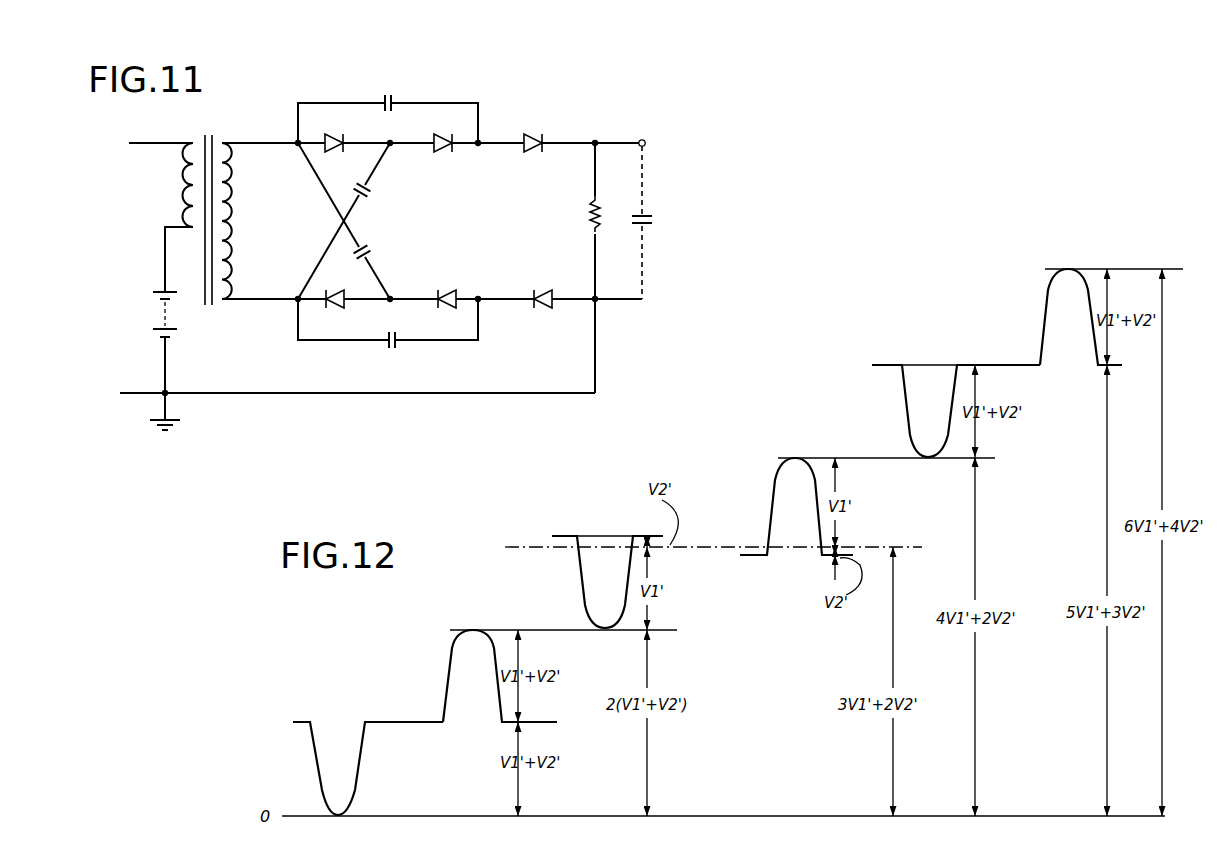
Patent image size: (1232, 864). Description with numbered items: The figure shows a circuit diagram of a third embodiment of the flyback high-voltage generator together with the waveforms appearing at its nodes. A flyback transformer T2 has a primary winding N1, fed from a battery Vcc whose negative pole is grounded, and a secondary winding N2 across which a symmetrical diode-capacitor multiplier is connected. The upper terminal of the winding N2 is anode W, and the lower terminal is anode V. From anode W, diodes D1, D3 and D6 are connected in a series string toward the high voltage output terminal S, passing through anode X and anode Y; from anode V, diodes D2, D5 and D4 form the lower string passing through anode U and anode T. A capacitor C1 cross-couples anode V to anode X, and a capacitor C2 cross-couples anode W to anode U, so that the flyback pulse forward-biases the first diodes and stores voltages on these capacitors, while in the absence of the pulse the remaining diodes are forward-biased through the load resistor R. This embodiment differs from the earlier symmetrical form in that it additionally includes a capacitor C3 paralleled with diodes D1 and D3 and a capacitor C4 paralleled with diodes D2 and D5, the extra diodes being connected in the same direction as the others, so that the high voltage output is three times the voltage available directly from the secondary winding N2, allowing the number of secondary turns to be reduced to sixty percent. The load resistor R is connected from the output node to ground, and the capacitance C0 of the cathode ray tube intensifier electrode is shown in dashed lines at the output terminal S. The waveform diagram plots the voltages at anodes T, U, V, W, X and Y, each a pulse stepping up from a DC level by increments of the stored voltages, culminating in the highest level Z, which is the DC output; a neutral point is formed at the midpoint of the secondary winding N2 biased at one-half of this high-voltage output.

In FIG. 11, the primary winding N1 is at (188, 188).
In FIG. 11, the secondary winding N2 is at (232, 205).
In FIG. 11, the flyback transformer T2 is at (212, 128).
In FIG. 11, the battery Vcc is at (158, 312).
In FIG. 11, the anode W is at (292, 139).
In FIG. 12, the anode W is at (770, 497).
In FIG. 11, the anode V is at (294, 306).
In FIG. 12, the anode V is at (561, 530).
In FIG. 11, the anode X is at (394, 150).
In FIG. 12, the anode X is at (898, 392).
In FIG. 11, the anode U is at (394, 294).
In FIG. 12, the anode U is at (444, 660).
In FIG. 11, the anode Y is at (483, 137).
In FIG. 12, the anode Y is at (1042, 297).
In FIG. 11, the anode T is at (483, 294).
In FIG. 12, the anode T is at (306, 746).
In FIG. 12, the anode Z is at (1156, 267).
In FIG. 11, the output terminal S is at (645, 140).
In FIG. 11, the diode D1' D1 is at (338, 128).
In FIG. 11, the diode D2' D2 is at (336, 309).
In FIG. 11, the diode D3' D3 is at (447, 128).
In FIG. 11, the diode D4' D4 is at (544, 289).
In FIG. 11, the diode D5' D5 is at (448, 290).
In FIG. 11, the diode D6' D6 is at (545, 138).
In FIG. 11, the capacitor C1' C1 is at (372, 190).
In FIG. 11, the capacitor C2' C2 is at (364, 248).
In FIG. 11, the capacitor C3' C3 is at (392, 98).
In FIG. 11, the capacitor C4' C4 is at (396, 344).
In FIG. 11, the capacitance of cathode ray tube C0 is at (651, 222).
In FIG. 11, the load resistor R is at (588, 222).